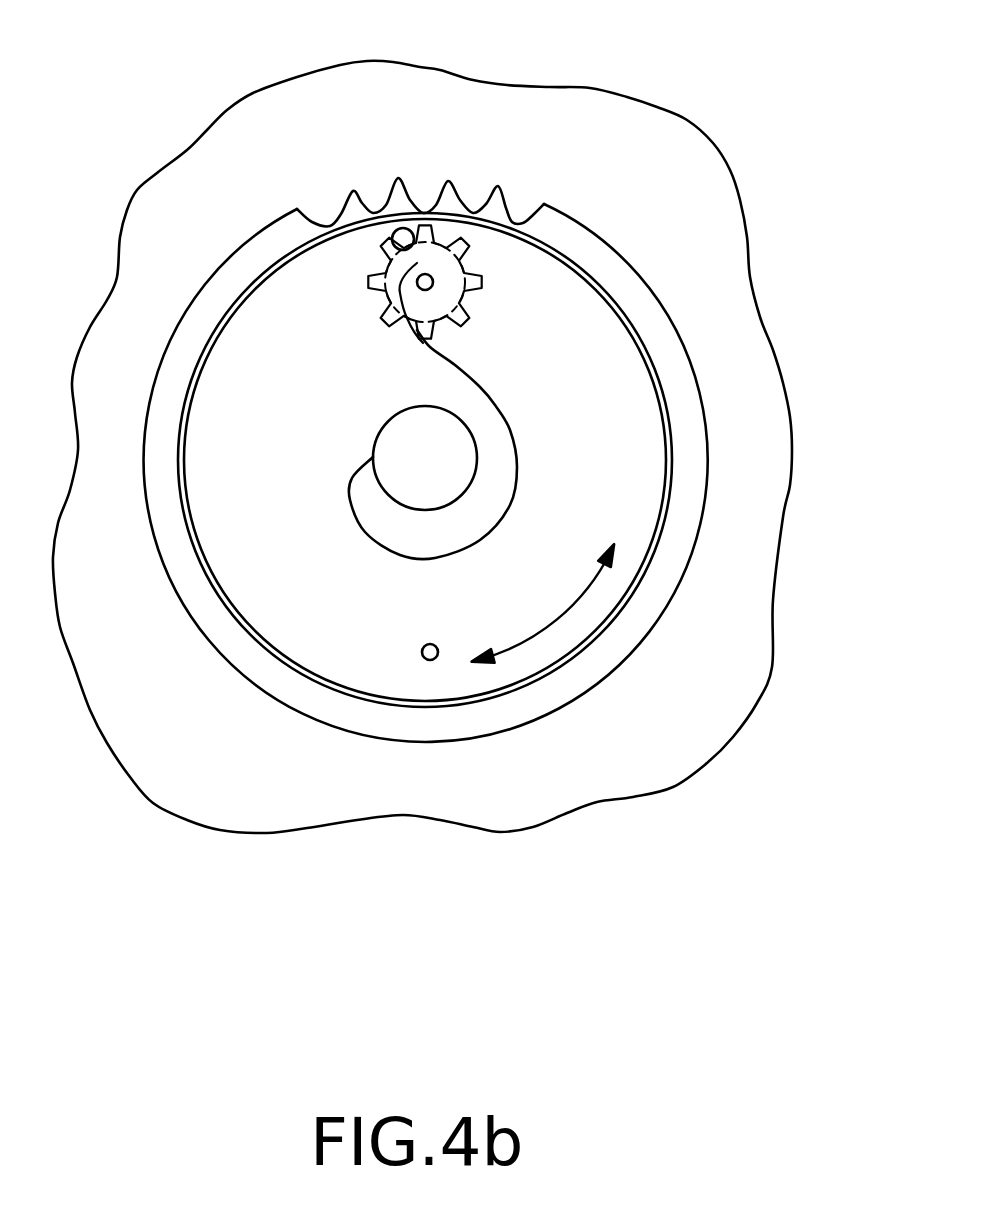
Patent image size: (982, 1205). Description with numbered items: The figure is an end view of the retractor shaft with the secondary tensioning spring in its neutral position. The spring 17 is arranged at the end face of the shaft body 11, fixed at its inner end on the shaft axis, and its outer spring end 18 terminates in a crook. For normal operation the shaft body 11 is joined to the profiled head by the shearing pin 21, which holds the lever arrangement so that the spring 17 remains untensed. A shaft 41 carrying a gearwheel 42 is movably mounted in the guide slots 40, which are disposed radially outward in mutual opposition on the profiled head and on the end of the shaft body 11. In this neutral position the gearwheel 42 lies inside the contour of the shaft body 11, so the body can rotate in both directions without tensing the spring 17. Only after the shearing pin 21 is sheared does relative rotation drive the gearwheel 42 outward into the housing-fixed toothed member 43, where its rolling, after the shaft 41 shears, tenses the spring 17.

The shaft body 11 is at (618, 496).
The spring 17 is at (515, 435).
The outer spring end 18 is at (440, 276).
The shearing pin 21 is at (423, 658).
The guide slots 40 is at (400, 233).
The shaft 41 is at (440, 272).
The gearwheel 42 is at (470, 302).
The toothed member 43 is at (508, 197).